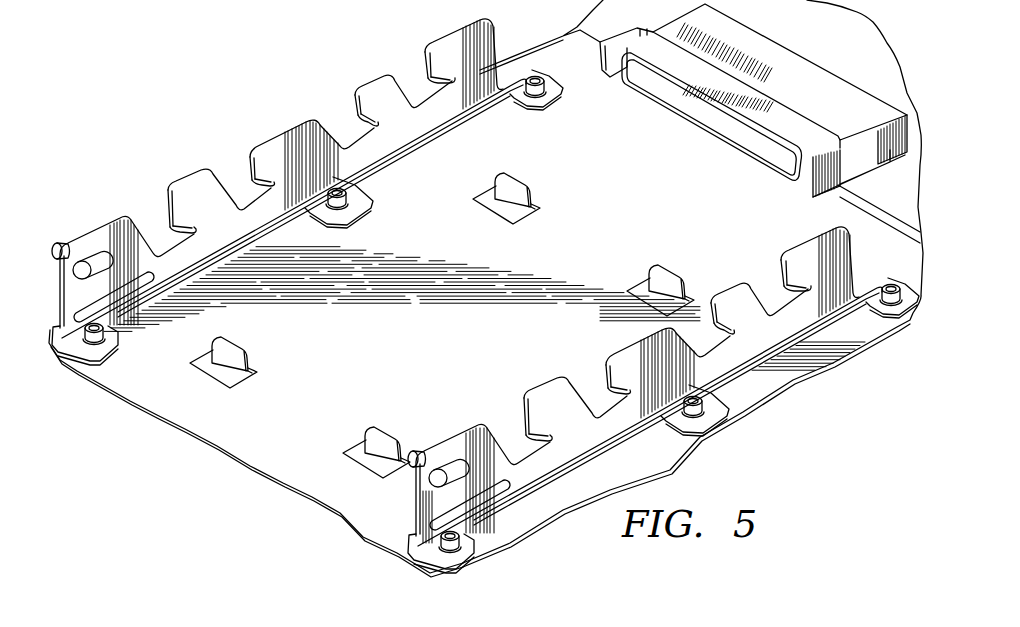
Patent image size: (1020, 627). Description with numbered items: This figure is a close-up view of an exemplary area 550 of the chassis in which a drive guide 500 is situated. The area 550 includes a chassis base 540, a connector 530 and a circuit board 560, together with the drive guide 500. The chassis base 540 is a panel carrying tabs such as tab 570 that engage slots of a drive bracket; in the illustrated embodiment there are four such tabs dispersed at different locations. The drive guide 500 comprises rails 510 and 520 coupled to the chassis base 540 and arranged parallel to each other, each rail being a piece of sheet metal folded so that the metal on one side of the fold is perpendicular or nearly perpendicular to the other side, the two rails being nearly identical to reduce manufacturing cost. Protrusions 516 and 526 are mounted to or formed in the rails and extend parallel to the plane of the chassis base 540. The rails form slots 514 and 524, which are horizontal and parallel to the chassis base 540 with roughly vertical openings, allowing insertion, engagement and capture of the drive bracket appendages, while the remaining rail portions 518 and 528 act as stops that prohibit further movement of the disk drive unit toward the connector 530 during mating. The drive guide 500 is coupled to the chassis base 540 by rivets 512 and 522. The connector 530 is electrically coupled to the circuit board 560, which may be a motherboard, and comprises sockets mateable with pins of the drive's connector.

The drive guide 500 is at (484, 306).
The rail 510 is at (759, 285).
The rivet 512 is at (414, 563).
The slot 514 is at (537, 410).
The protrusion 516 is at (501, 521).
The portion of rail 518 is at (621, 373).
The rail 520 is at (390, 92).
The rivet 522 is at (105, 345).
The slot 524 is at (146, 236).
The protrusion 526 is at (57, 244).
The portion of rail 528 is at (190, 207).
The connector 530 is at (812, 78).
The chassis base 540 is at (262, 452).
The area 550 is at (778, 424).
The circuit board 560 is at (900, 195).
The tab 570 is at (672, 284).